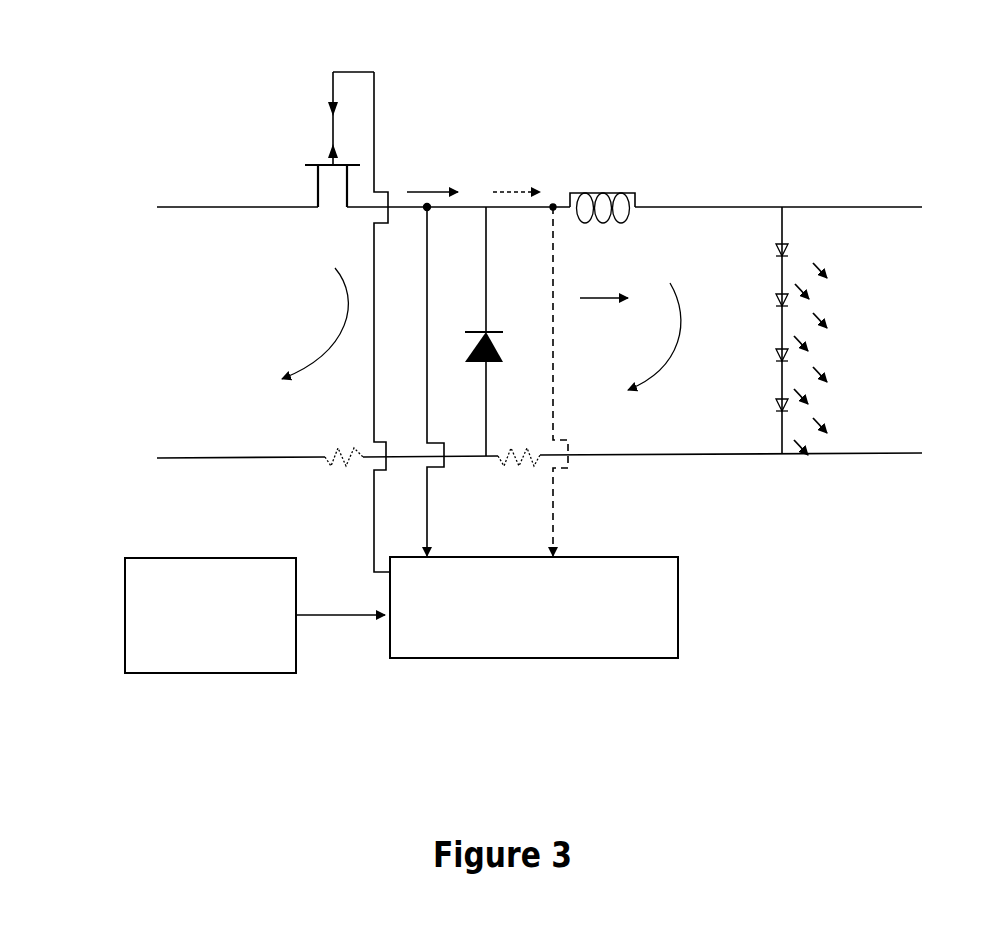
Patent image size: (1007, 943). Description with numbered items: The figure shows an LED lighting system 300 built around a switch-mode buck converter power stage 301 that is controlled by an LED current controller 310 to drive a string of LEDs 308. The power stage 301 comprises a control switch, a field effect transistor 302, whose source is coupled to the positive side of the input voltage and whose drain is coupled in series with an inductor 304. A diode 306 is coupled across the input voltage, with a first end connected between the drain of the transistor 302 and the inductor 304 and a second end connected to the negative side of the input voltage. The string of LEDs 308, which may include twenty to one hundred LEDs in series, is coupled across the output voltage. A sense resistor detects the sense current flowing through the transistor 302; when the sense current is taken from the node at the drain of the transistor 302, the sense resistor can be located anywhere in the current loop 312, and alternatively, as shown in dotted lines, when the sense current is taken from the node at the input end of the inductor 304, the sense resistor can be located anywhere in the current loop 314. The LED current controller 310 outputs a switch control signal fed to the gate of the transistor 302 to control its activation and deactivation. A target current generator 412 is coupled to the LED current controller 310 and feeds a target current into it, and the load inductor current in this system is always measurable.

The LED lighting system 300 is at (788, 100).
The switch-mode buck converter power stage 301 is at (829, 202).
The control switch (FET) 302 is at (318, 192).
The inductor 304 is at (588, 198).
The diode 306 is at (492, 330).
The LEDs (string of LEDs) 308 is at (761, 318).
The LED current controller 310 is at (534, 607).
The current loop 312 is at (315, 323).
The current loop 314 is at (654, 336).
The target current generator 412 is at (210, 615).